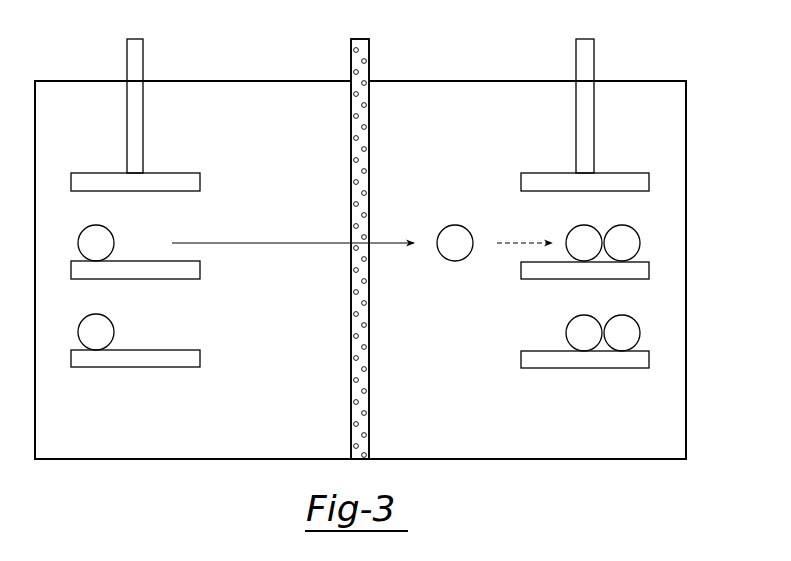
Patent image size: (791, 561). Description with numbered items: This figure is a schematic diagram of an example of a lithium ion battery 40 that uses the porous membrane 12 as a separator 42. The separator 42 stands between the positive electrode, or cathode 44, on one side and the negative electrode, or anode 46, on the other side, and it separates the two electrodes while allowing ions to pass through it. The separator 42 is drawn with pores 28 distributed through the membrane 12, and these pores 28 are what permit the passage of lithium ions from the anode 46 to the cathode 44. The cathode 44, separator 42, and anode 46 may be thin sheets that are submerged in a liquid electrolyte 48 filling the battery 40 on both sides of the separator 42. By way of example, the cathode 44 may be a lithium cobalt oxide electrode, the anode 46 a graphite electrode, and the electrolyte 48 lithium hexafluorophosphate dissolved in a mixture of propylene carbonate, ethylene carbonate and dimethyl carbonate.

The lithium ion battery 40 is at (678, 482).
The pores 28 is at (366, 332).
The porous membrane 12 is at (374, 392).
The separator 42 is at (432, 249).
The positive electrode (cathode) 44 is at (599, 99).
The negative electrode (anode) 46 is at (119, 99).
The liquid electrolyte 48 is at (416, 133).